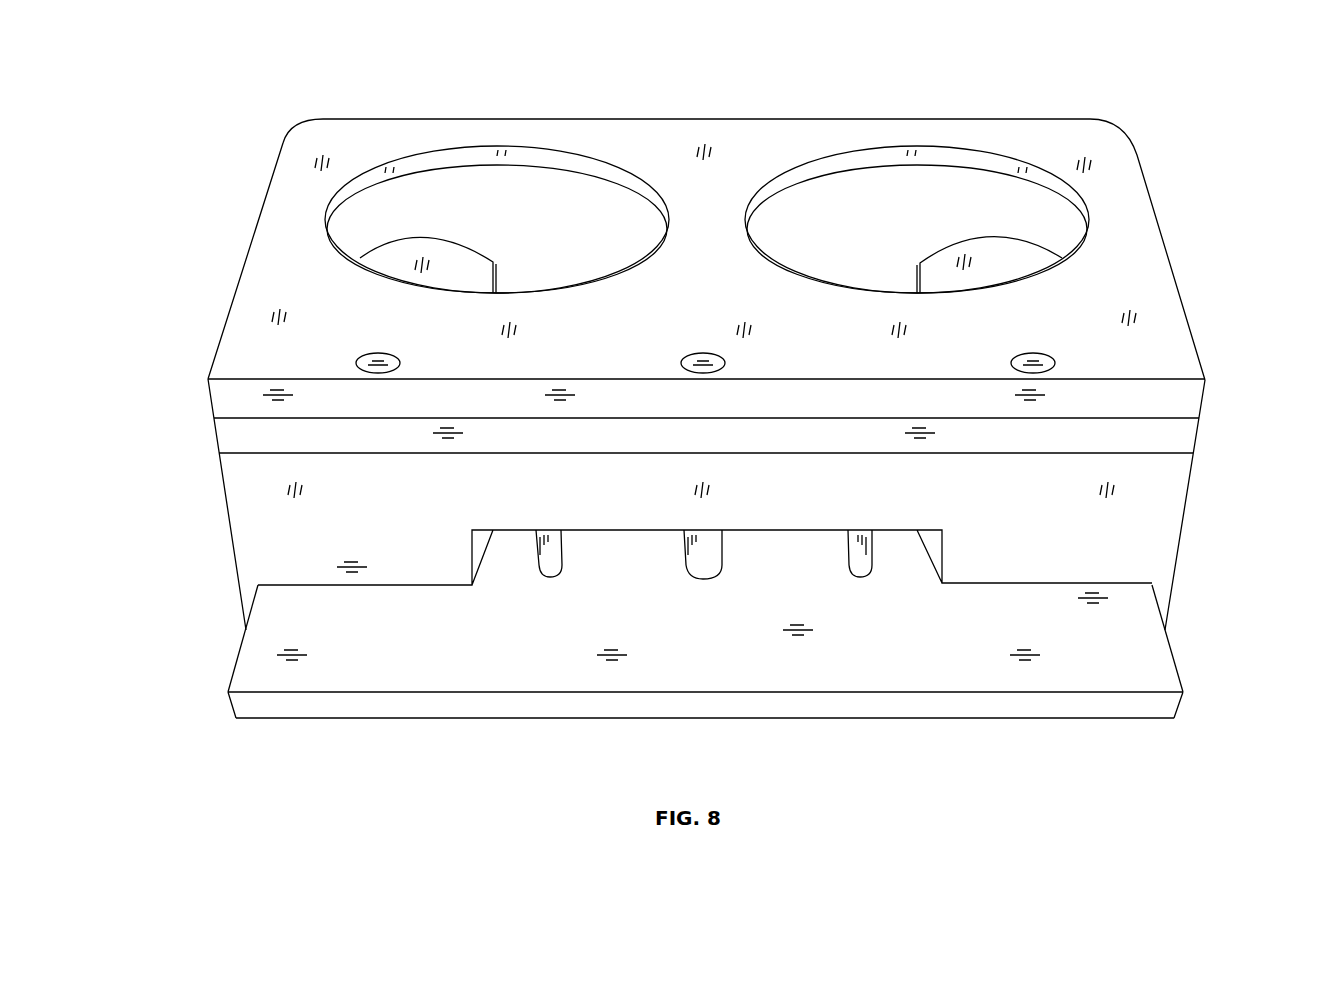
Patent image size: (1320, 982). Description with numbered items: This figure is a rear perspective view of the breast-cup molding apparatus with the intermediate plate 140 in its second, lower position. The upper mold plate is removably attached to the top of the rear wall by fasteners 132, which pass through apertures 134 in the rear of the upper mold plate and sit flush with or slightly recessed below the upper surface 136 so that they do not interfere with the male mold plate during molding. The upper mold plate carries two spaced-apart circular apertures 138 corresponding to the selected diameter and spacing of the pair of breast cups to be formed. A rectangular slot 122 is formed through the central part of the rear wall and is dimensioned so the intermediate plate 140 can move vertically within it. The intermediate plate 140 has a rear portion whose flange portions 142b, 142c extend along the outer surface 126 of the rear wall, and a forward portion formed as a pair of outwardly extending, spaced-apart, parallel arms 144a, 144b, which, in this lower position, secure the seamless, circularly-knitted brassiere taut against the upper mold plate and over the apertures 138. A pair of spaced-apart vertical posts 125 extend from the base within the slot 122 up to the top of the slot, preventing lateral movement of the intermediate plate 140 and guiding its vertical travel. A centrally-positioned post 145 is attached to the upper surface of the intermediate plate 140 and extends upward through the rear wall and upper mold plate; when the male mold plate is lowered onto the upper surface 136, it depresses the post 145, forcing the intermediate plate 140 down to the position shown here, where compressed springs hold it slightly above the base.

The rectangular slot 122 is at (505, 528).
The vertical posts 125 is at (862, 567).
The outer surface 126 is at (1165, 482).
The fasteners 132 is at (1053, 358).
The apertures 134 is at (1054, 362).
The upper surface 136 is at (327, 133).
The circular apertures 138 is at (455, 148).
The intermediate plate 140 is at (475, 705).
The flange portion 142b is at (268, 644).
The flange portion 142c is at (1158, 637).
The arm 144a is at (1020, 253).
The arm 144b is at (377, 267).
The centrally-positioned post 145 is at (703, 352).